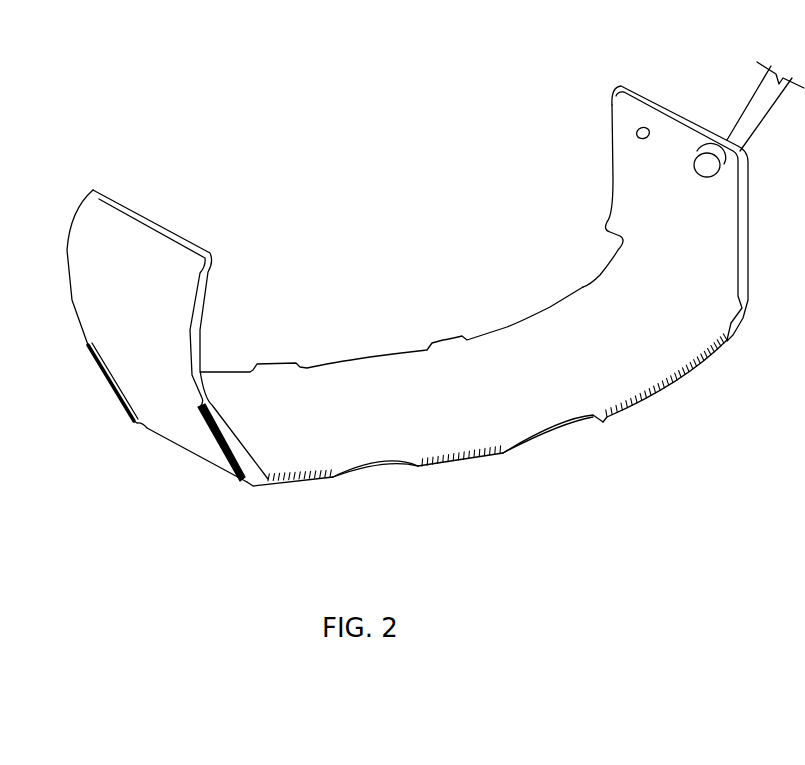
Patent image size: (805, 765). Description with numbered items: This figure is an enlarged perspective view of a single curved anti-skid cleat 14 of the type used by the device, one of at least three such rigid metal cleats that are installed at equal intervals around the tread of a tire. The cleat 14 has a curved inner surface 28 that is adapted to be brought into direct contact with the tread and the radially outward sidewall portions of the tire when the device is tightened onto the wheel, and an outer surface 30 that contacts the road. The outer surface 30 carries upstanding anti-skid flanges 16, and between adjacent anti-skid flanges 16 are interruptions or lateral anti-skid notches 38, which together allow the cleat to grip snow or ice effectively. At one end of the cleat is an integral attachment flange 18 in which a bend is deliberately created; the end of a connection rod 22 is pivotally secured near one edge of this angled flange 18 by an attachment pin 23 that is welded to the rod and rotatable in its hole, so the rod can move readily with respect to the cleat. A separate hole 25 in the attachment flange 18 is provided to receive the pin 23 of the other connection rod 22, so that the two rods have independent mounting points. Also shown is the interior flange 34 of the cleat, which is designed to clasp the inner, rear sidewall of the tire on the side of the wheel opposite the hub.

The cleat 14 is at (725, 348).
The anti-skid flange 16 is at (247, 485).
The attachment flange 18 is at (618, 185).
The connection rod 22 is at (744, 108).
The attachment pin 23 is at (708, 166).
The hole 25 is at (637, 133).
The inner surface 28 is at (603, 307).
The outer surface 30 is at (192, 452).
The interior flange 34 is at (113, 193).
The lateral anti-skid notch 38 is at (430, 337).